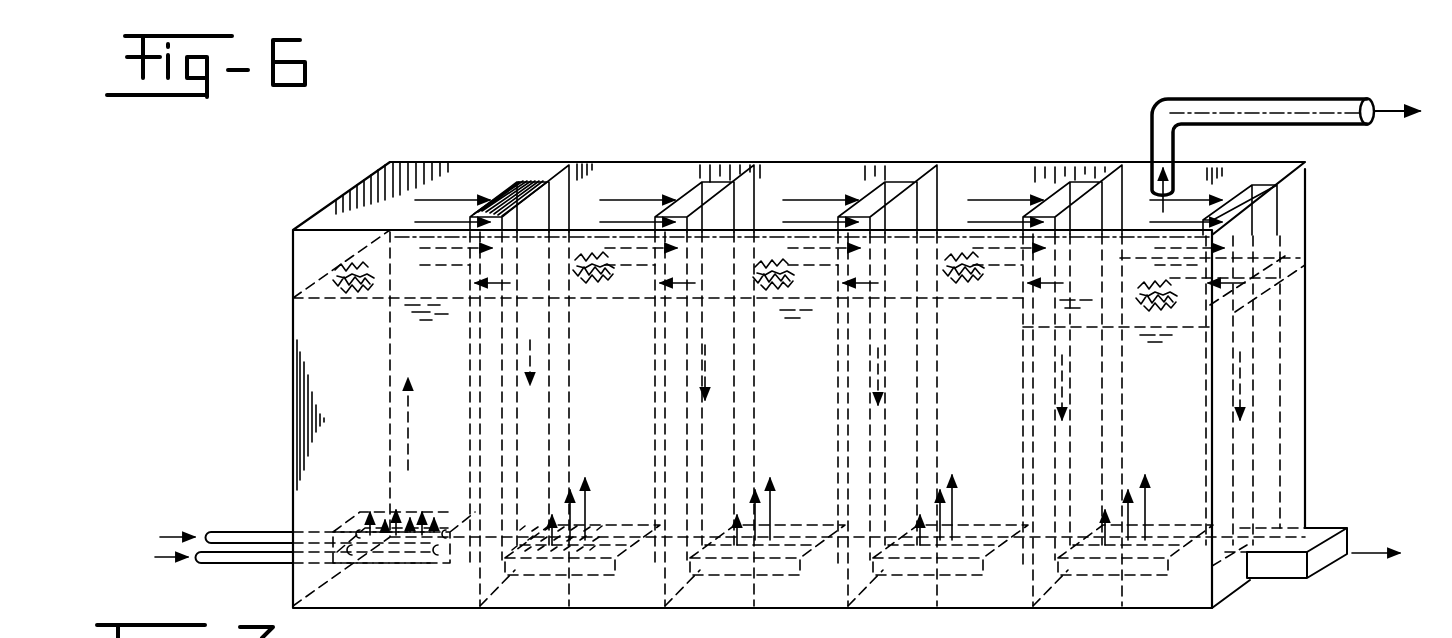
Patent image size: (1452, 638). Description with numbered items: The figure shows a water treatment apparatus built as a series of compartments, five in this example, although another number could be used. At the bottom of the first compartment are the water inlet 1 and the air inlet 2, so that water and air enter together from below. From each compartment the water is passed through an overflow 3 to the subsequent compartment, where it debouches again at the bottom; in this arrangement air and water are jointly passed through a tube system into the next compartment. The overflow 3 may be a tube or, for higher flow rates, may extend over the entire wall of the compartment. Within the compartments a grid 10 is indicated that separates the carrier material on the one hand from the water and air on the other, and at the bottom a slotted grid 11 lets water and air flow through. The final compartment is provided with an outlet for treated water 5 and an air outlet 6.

The water inlet 1 is at (262, 532).
The air inlet 2 is at (263, 565).
The overflow 3 is at (548, 182).
The outlet for treated water 5 is at (1283, 574).
The air outlet 6 is at (1260, 105).
The grid 10 is at (335, 266).
The slotted grid 11 is at (594, 562).